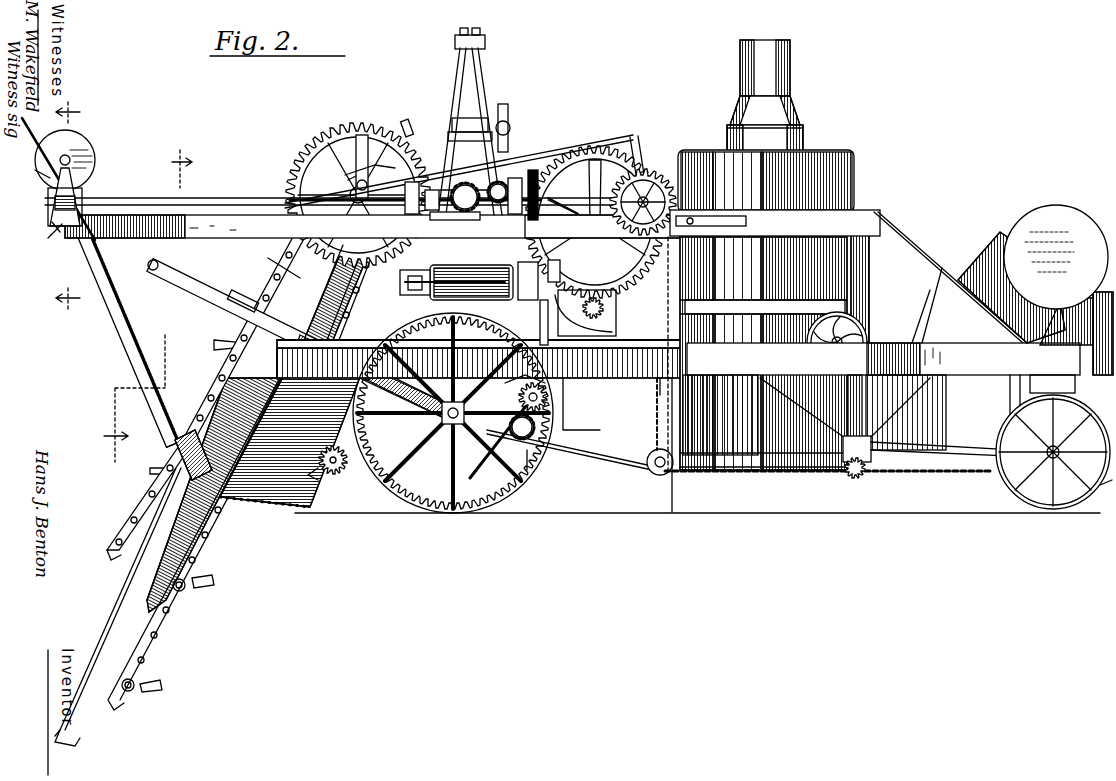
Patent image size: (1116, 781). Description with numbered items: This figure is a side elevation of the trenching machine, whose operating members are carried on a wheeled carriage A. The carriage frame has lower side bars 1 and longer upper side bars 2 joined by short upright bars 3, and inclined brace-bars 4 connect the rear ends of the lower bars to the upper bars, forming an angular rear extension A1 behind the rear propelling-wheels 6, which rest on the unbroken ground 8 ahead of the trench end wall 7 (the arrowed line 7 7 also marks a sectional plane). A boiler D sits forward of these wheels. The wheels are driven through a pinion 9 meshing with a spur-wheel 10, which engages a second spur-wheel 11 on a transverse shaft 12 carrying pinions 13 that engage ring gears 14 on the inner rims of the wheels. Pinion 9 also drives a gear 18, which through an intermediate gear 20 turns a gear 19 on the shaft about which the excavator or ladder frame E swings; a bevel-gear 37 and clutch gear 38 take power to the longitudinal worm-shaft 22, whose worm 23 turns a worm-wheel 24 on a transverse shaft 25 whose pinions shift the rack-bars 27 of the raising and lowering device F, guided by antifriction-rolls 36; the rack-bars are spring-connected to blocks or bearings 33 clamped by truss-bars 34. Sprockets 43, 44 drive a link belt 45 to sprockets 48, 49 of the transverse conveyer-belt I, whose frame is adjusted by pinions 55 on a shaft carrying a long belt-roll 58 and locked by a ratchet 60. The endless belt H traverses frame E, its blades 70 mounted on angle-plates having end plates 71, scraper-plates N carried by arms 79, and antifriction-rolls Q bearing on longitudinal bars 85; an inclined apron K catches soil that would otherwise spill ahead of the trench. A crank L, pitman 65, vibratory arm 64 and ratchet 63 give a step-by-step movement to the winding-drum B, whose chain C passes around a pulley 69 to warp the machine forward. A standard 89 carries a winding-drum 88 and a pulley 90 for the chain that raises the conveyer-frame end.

The lower side bars 1 is at (881, 373).
The upper side bars 2 is at (882, 222).
The upright bars 3 is at (884, 298).
The inclined brace-bars 4 is at (196, 290).
The rear propelling-wheels 6 is at (536, 462).
The end wall or bank 7 is at (148, 305).
The unbroken ground 8 is at (362, 507).
The pinion 9 is at (606, 308).
The spur-wheel 10 is at (616, 332).
The second spur-wheel 11 is at (552, 404).
The transversely-arranged rotary shaft 12 is at (527, 456).
The gears or pinions 13 is at (294, 283).
The ring gears 14 is at (453, 413).
The gear or spur 18 is at (595, 222).
The gear 19 is at (355, 193).
The intermediate gear 20 is at (520, 172).
The rotary shaft or rod 22 is at (260, 204).
The worm 23 is at (54, 230).
The worm-wheel 24 is at (88, 150).
The transversely-arranged rotary shaft 25 is at (68, 158).
The rack-bars 27 is at (118, 339).
The blocks or bearings 33 is at (440, 216).
The truss-bars 34 is at (140, 570).
The antifriction-rolls 36 is at (48, 206).
The bevel-gear 37 is at (508, 178).
The gear 38 is at (524, 270).
The sprocket 43 is at (535, 194).
The sprocket 44 is at (444, 158).
The link belt 45 is at (528, 226).
The sprocket 48 is at (550, 268).
The sprocket 49 is at (346, 300).
The pinions 55 is at (368, 346).
The long belt-roll 58 is at (400, 346).
The ratchet 60 is at (645, 375).
The ratchet 63 is at (660, 176).
The vibratory arm 64 is at (640, 134).
The pitman 65 is at (556, 158).
The pulley 69 is at (656, 474).
The blades or cutters 70 is at (412, 138).
The end plates 71 is at (185, 590).
The arms or plates 79 is at (286, 262).
The longitudinal bars 85 is at (222, 528).
The winding-drum 88 is at (508, 112).
The standard 89 is at (462, 82).
The pulley 90 is at (478, 36).
The wheeled carriage A is at (617, 445).
The angular rear extension A1 is at (274, 260).
The winding-drum B is at (690, 148).
The chain or cable C is at (827, 405).
The boiler D is at (852, 176).
The swinging excavator or ladder frame E is at (78, 669).
The raising and lowering device F is at (139, 403).
The endless belt H is at (222, 382).
The conveyer-belt I is at (456, 272).
The inclined apron or trough K is at (290, 442).
The crank L is at (361, 167).
The wipers or ejectors N is at (152, 664).
The antifriction-rolls Q is at (126, 545).